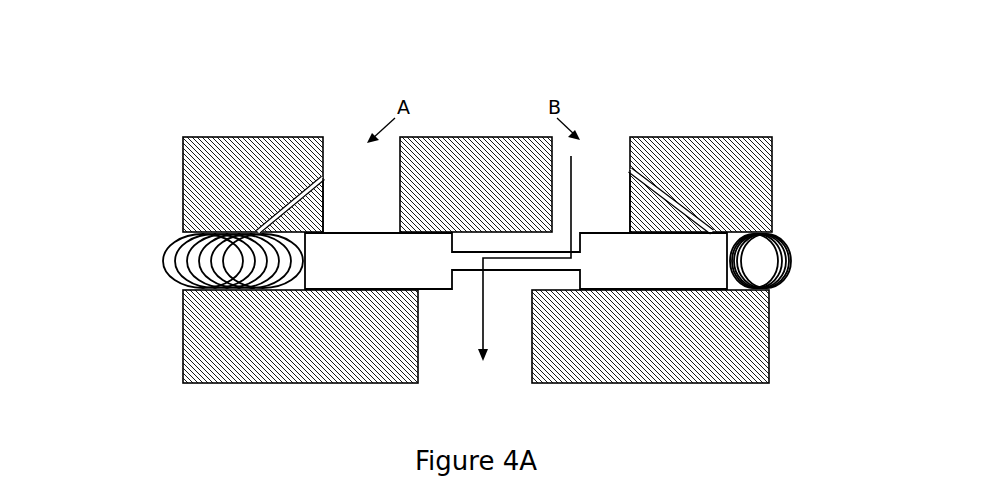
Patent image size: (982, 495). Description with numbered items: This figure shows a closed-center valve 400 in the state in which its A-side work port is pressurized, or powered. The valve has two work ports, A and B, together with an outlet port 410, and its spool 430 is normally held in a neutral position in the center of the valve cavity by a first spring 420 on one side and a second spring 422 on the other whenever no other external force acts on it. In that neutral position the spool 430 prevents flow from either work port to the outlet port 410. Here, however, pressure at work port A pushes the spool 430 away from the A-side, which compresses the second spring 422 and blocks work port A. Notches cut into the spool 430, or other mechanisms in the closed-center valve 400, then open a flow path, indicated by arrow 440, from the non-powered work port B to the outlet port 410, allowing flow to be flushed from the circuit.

The closed-center valve 400 is at (112, 152).
The outlet port 410 is at (435, 390).
The first spring 420 is at (146, 289).
The second spring 422 is at (808, 285).
The spool 430 is at (391, 270).
The flow path arrow 440 is at (588, 182).